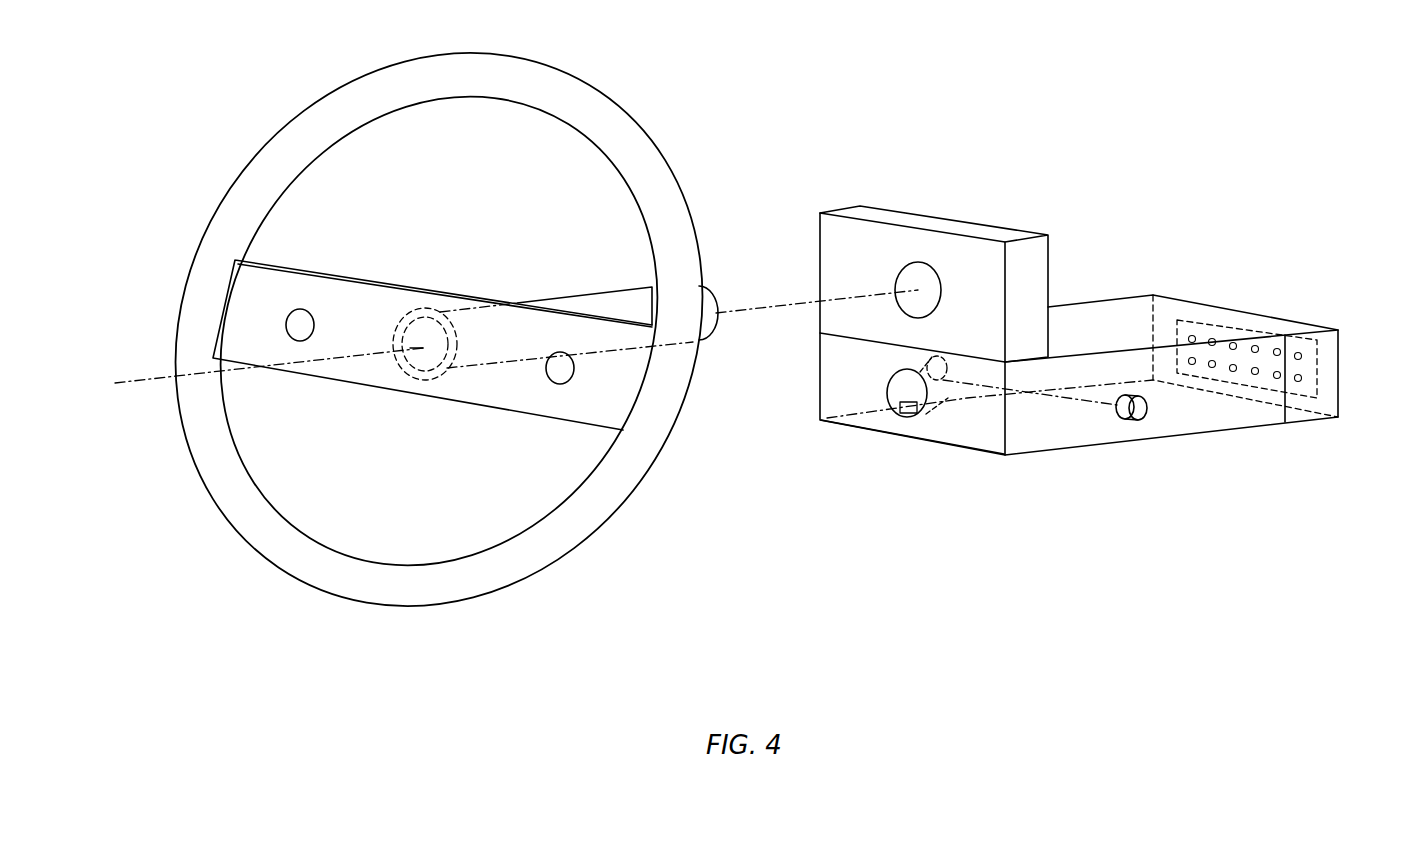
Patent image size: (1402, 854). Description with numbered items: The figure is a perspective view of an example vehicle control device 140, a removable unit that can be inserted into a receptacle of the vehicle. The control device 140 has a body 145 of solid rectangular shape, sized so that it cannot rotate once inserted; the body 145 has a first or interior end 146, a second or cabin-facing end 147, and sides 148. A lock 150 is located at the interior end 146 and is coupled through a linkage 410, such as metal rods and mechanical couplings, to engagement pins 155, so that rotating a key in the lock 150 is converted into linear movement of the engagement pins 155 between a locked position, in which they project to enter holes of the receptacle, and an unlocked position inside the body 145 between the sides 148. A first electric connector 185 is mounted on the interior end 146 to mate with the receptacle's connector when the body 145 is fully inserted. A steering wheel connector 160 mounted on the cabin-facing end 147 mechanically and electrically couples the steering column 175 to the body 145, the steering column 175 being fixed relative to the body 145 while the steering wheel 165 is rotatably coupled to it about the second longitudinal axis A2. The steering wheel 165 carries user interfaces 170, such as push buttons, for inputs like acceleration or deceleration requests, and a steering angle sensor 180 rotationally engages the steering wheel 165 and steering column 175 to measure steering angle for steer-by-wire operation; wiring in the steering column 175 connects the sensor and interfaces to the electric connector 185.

The control device 140 is at (1097, 237).
The body 145 is at (1258, 430).
The interior end 146 is at (1338, 420).
The cabin-facing end 147 is at (905, 442).
The sides 148 is at (833, 392).
The lock 150 is at (900, 388).
The engagement pins 155 is at (927, 364).
The steering wheel connector 160 is at (840, 245).
The steering wheel 165 is at (385, 607).
The user interfaces 170 is at (303, 318).
The steering column 175 is at (622, 290).
The steering angle sensor 180 is at (430, 308).
The first electric connector 185 is at (1310, 337).
The linkage 410 is at (967, 397).
The second longitudinal axis A2 is at (148, 378).